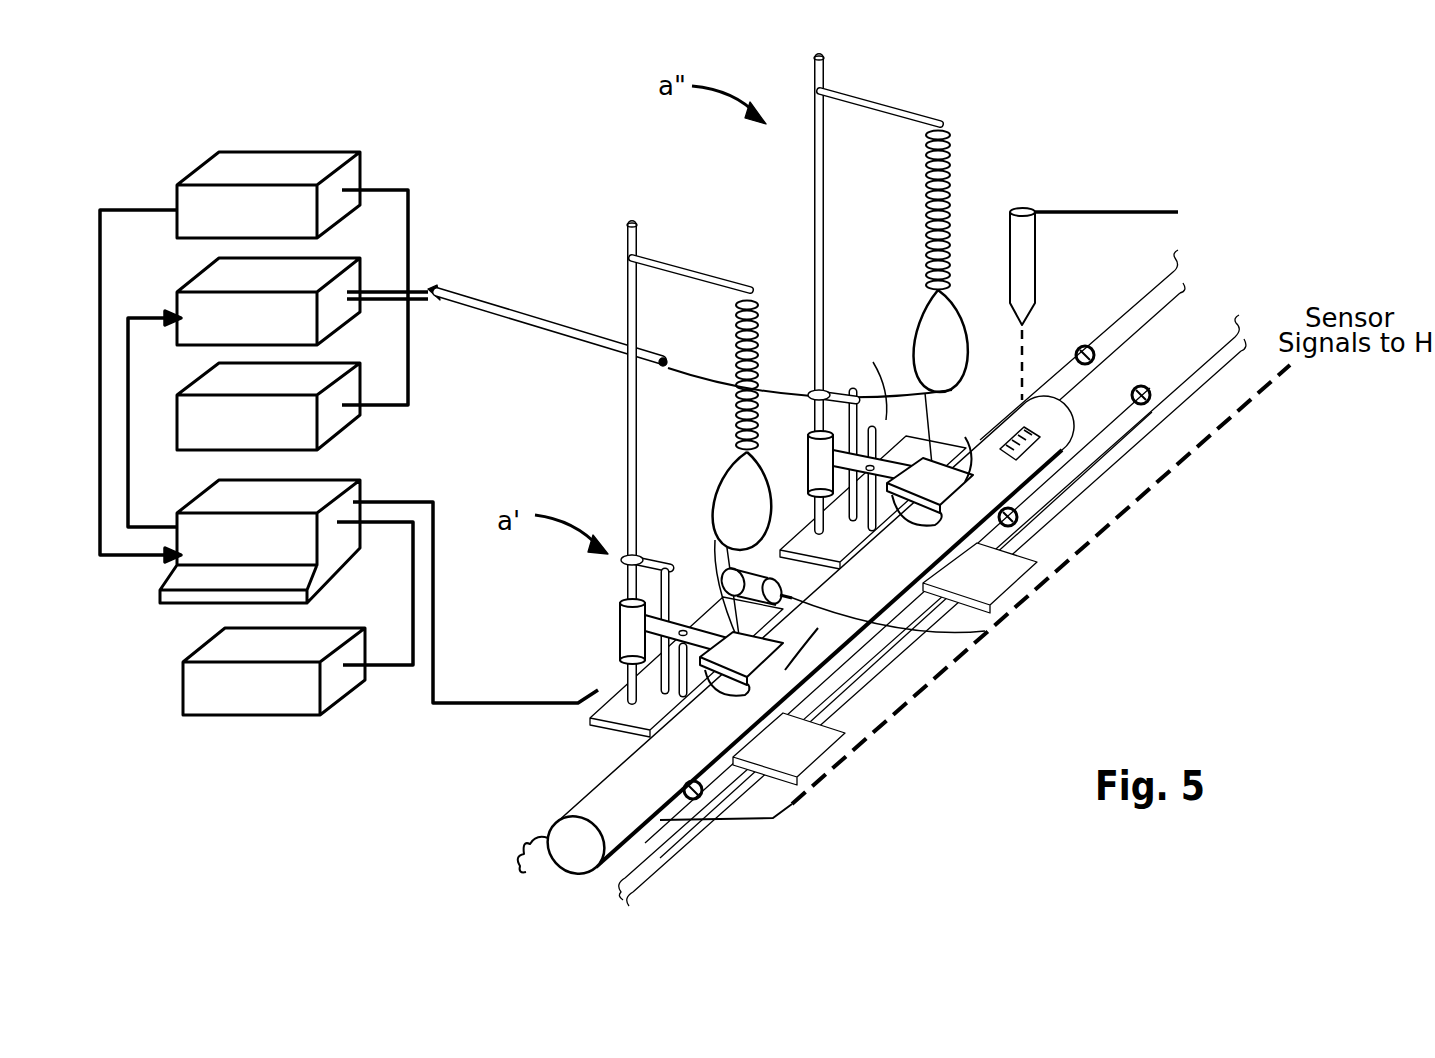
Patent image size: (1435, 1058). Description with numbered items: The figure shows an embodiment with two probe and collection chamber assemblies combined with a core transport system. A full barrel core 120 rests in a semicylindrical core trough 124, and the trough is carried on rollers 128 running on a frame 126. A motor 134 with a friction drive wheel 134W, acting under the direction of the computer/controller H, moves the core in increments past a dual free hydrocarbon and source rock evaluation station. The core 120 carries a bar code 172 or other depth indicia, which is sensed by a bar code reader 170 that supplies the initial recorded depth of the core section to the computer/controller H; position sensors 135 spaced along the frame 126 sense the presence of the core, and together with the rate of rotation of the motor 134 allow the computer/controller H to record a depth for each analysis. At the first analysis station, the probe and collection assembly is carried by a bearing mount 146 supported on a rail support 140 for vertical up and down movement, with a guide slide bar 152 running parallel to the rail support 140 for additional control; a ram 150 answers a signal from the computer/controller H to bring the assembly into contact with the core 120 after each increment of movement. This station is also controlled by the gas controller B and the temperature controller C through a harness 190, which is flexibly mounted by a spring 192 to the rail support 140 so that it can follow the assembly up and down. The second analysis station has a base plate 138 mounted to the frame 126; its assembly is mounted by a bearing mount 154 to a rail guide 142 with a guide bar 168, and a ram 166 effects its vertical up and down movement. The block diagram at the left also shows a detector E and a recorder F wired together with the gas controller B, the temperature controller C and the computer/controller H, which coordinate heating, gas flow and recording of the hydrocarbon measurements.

The full barrel core 120 is at (642, 802).
The semicylindrical core trough 124 is at (840, 652).
The frame 126 is at (530, 838).
The rollers 128 is at (1022, 520).
The motor 134 is at (740, 573).
The friction drive wheel 134W is at (987, 631).
The position sensors 135 is at (742, 825).
The base plate 138 is at (885, 664).
The rail support 140 is at (628, 425).
The rail guide 142 is at (815, 208).
The bearing mount 146 is at (620, 632).
The ram 150 is at (643, 727).
The guide slide bar 152 is at (678, 585).
The bearing mount 154 is at (781, 388).
The ram 166 is at (895, 400).
The guide bar 168 is at (885, 405).
The bar code reader 170 is at (1045, 246).
The bar code 172 is at (1043, 418).
The harness 190 is at (470, 300).
The spring 192 is at (738, 365).
The detector E is at (205, 165).
The gas controller B is at (205, 290).
The temperature controller C is at (342, 418).
The computer/controller H is at (337, 488).
The recorder F is at (183, 668).